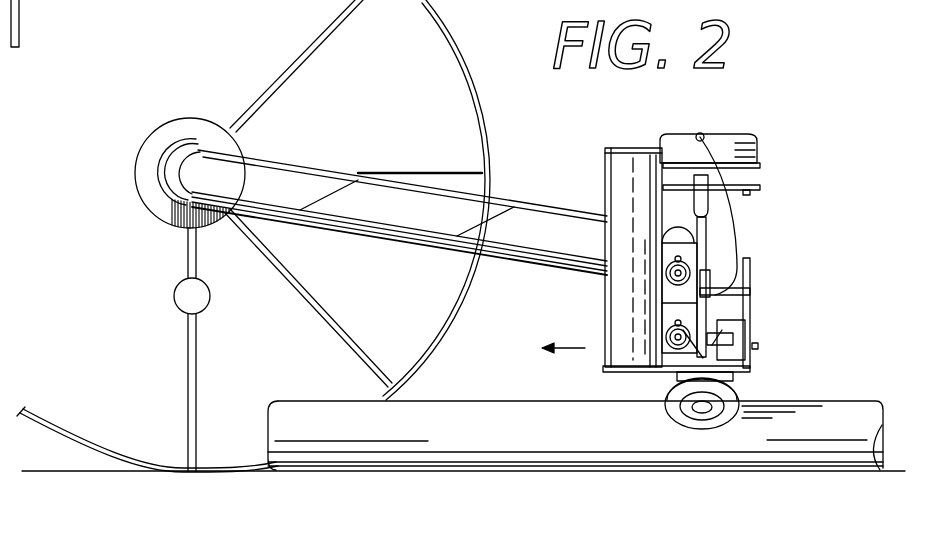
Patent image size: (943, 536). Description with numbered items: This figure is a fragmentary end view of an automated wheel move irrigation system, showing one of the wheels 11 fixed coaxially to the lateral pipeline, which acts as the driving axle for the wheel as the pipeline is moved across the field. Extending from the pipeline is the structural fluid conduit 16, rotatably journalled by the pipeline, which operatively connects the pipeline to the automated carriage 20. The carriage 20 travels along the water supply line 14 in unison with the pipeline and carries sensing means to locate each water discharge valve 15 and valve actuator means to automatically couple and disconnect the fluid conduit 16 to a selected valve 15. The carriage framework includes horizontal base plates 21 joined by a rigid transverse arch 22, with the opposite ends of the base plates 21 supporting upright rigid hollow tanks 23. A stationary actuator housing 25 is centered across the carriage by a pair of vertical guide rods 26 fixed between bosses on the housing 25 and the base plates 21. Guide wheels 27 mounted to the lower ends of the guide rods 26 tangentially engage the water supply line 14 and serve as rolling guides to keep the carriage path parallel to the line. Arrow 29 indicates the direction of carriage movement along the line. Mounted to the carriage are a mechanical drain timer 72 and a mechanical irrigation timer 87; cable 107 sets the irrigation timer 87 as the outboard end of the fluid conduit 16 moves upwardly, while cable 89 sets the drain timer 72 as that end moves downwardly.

The wheel 11 is at (462, 65).
The water supply line 14 is at (507, 471).
The water discharge valve 15 is at (735, 345).
The structural fluid conduit 16 is at (463, 251).
The carriage 20 is at (753, 278).
The base plate 21 is at (637, 368).
The transverse arch 22 is at (751, 314).
The upright rigid hollow tank 23 is at (621, 319).
The stationary actuator housing 25 is at (753, 146).
The guide rod 26 is at (709, 227).
The guide wheel 27 is at (738, 392).
The arrow 29 is at (572, 351).
The mechanical drain timer 72 is at (661, 263).
The mechanical irrigation timer 87 is at (672, 320).
The cable 89 is at (661, 246).
The cable 107 is at (668, 344).